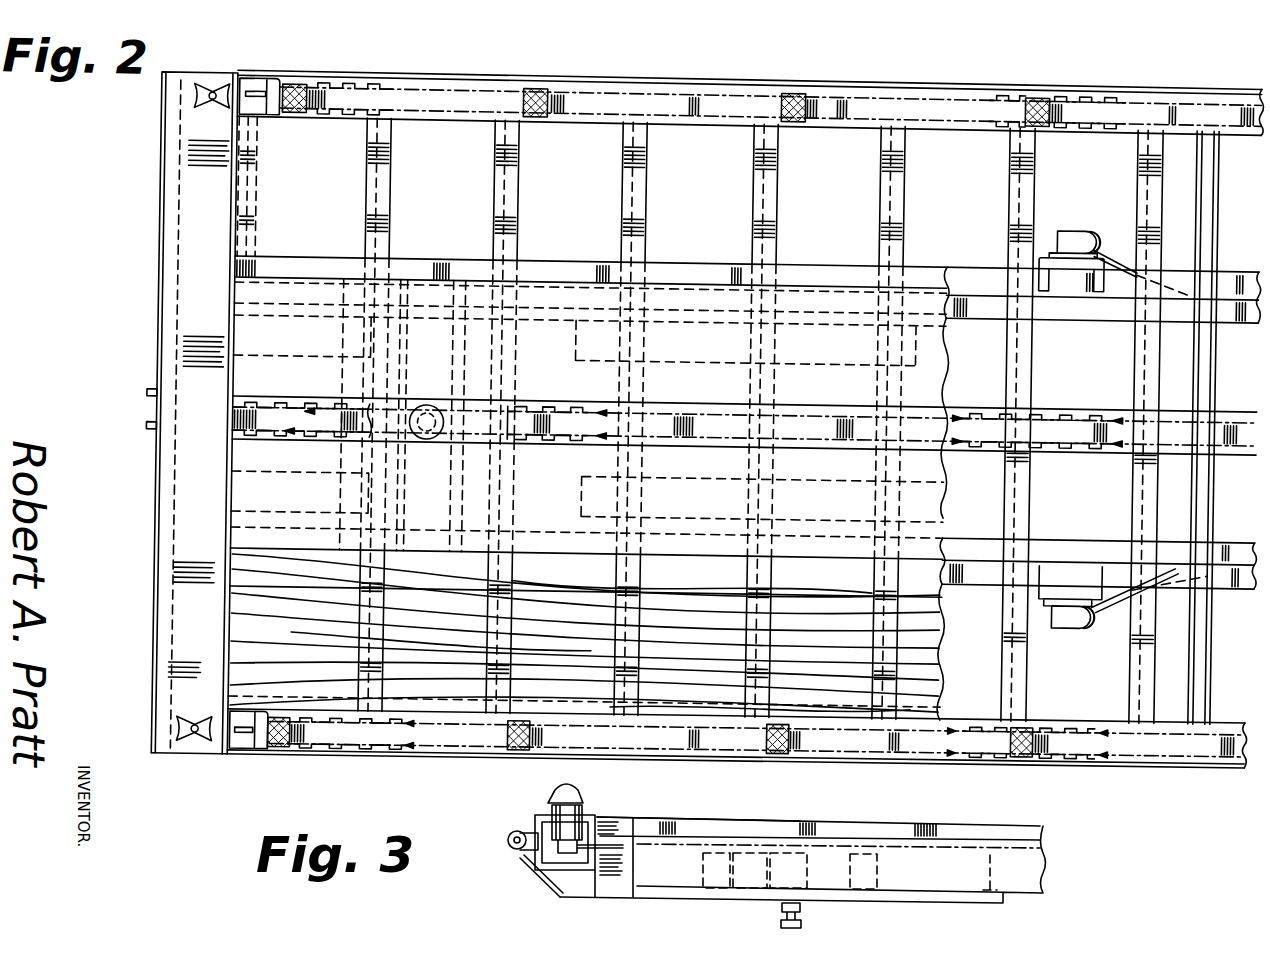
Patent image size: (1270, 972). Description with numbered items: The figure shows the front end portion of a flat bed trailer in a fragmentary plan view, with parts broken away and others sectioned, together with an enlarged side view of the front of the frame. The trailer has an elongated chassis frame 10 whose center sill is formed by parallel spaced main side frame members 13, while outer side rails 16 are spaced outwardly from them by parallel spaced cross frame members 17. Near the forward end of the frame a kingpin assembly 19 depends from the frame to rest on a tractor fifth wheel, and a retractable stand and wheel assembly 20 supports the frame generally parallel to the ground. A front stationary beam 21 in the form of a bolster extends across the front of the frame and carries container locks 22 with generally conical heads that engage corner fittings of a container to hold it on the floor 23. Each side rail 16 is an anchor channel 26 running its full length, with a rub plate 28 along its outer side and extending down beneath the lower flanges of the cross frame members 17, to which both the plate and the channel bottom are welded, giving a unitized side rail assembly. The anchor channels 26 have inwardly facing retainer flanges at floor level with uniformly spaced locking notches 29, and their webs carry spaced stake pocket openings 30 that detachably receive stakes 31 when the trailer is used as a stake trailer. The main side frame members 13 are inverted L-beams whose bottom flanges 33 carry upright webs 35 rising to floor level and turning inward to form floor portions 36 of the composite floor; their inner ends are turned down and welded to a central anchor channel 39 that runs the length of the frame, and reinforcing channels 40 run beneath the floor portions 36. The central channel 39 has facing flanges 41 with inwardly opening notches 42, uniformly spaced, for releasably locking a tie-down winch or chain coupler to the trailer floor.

In FIG. 2, the chassis frame 10 is at (409, 757).
In FIG. 2, the main side frame member 13 is at (1240, 253).
In FIG. 2, the outer side rail 16 is at (511, 73).
In FIG. 3, the outer side rail 16 is at (872, 822).
In FIG. 2, the cross frame member 17 is at (392, 212).
In FIG. 2, the kingpin assembly 19 is at (432, 398).
In FIG. 3, the kingpin assembly 19 is at (803, 917).
In FIG. 2, the retractable stand and wheel assembly 20 is at (1089, 614).
In FIG. 2, the front stationary beam 21 is at (195, 510).
In FIG. 3, the front stationary beam 21 is at (537, 822).
In FIG. 2, the container lock 22 is at (205, 95).
In FIG. 3, the container lock 22 is at (585, 793).
In FIG. 2, the floor 23 is at (961, 601).
In FIG. 2, the anchor channel 26 is at (440, 115).
In FIG. 3, the anchor channel 26 is at (918, 823).
In FIG. 2, the rub plate 28 is at (375, 71).
In FIG. 3, the rub plate 28 is at (947, 847).
In FIG. 2, the locking notch 29 is at (318, 90).
In FIG. 2, the stake pocket opening 30 is at (533, 93).
In FIG. 2, the stake 31 is at (522, 98).
In FIG. 2, the bottom flange 33 is at (978, 265).
In FIG. 2, the upright web 35 is at (952, 278).
In FIG. 2, the floor portion 36 is at (954, 340).
In FIG. 2, the central anchor channel 39 is at (338, 438).
In FIG. 2, the reinforcing channel 40 is at (603, 360).
In FIG. 2, the facing flange 41 is at (311, 428).
In FIG. 2, the notch 42 is at (301, 426).